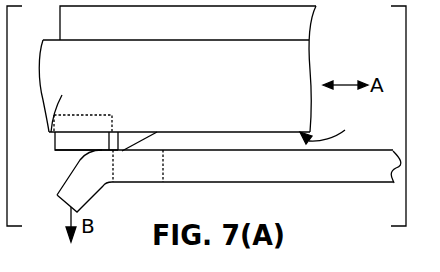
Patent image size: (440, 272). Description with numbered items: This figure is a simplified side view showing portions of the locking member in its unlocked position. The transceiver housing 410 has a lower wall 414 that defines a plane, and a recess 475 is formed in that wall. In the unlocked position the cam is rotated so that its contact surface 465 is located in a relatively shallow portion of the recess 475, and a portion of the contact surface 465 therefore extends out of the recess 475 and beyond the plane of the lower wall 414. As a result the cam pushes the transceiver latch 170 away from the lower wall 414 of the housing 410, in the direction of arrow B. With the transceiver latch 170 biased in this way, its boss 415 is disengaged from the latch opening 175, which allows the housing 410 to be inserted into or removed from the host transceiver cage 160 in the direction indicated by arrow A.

The host transceiver cage 160 is at (300, 22).
The housing 410 is at (207, 90).
The lower wall 414 is at (343, 126).
The recess 475 is at (55, 143).
The contact surface 465 is at (78, 150).
The transceiver latch 170 is at (87, 195).
The latch opening 175 is at (140, 175).
The boss 415 is at (138, 138).